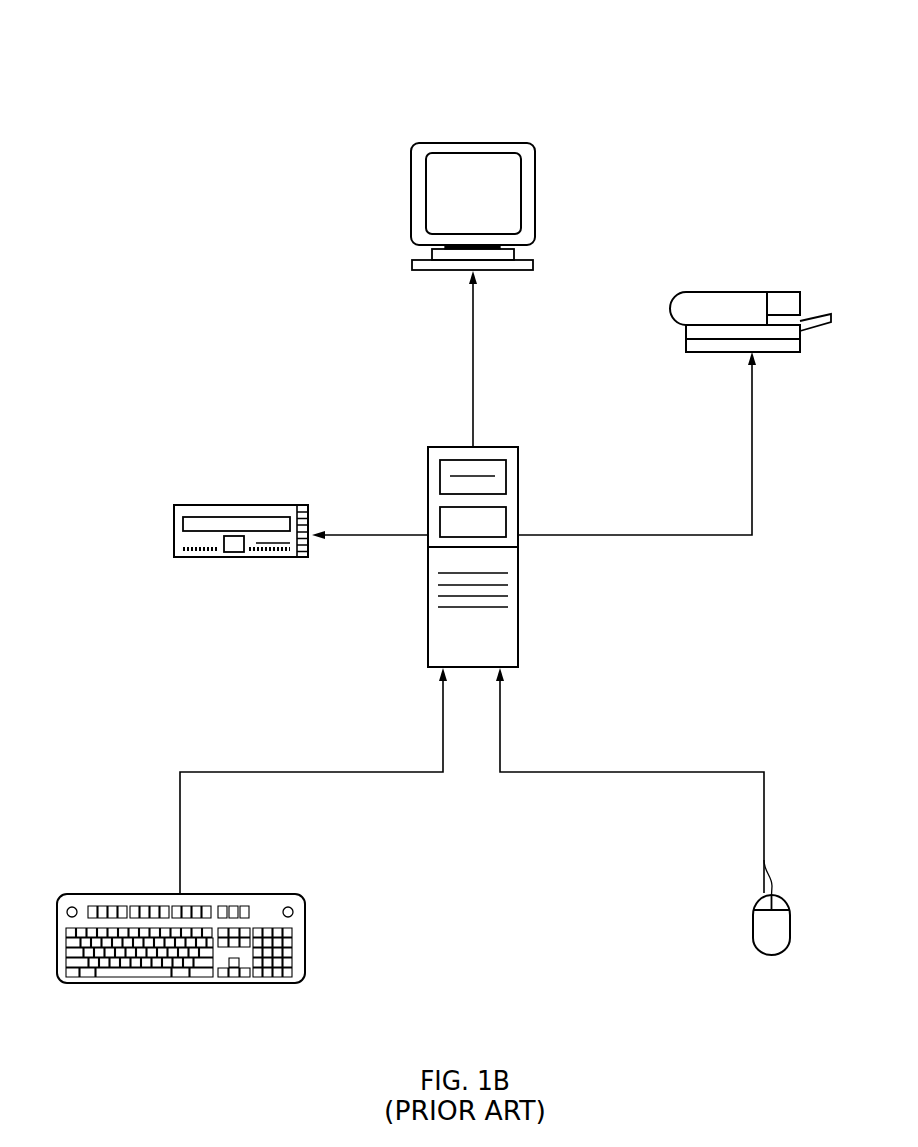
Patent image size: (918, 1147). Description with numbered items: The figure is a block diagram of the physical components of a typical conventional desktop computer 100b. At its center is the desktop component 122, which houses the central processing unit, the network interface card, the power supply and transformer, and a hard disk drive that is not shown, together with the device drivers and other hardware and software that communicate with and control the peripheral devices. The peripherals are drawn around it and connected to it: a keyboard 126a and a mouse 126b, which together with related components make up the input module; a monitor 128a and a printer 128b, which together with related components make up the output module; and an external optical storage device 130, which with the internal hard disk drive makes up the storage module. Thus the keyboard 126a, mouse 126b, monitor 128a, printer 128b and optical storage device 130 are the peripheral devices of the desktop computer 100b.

The desktop computer 100b is at (724, 58).
The desktop component 122 is at (518, 455).
The keyboard 126a is at (305, 940).
The mouse 126b is at (790, 928).
The monitor 128a is at (535, 193).
The printer 128b is at (800, 300).
The external optical storage device 130 is at (259, 505).